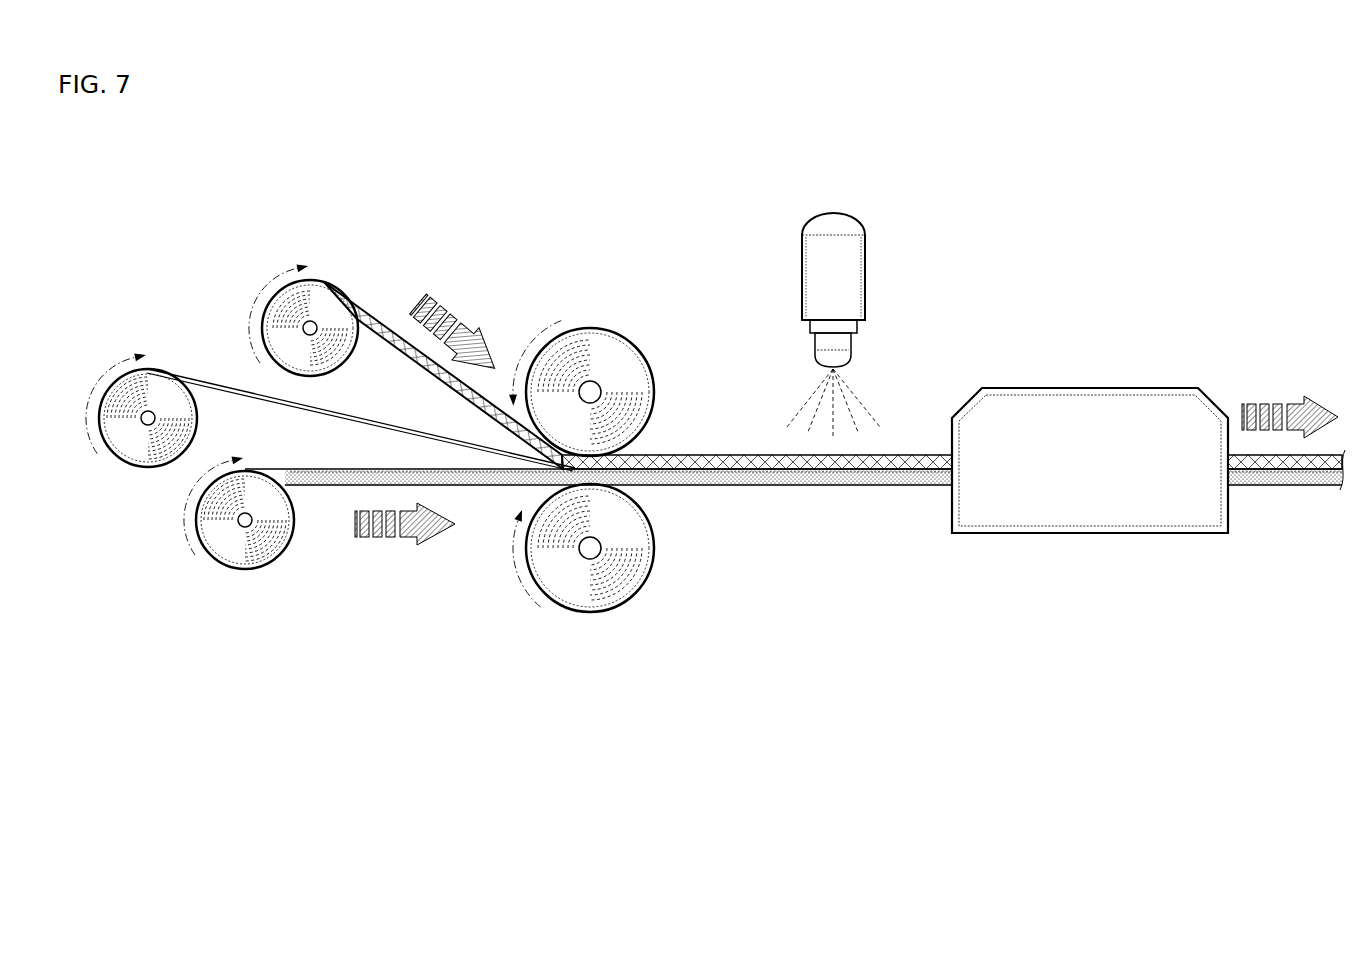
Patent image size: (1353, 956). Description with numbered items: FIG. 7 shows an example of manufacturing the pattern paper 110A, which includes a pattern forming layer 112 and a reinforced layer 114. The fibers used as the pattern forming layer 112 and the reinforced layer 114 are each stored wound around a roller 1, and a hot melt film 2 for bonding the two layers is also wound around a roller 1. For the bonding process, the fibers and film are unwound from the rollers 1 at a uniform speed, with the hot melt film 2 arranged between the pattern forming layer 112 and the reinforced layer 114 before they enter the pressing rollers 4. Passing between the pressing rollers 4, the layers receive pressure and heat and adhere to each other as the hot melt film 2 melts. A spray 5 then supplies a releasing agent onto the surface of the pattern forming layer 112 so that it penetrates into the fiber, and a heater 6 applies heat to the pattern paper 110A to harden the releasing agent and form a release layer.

The roller 1 is at (311, 279).
The hot melt film 2 is at (198, 373).
The pressing rollers 4 is at (592, 327).
The spray 5 is at (833, 212).
The heater 6 is at (1090, 387).
The pattern forming layer 112 is at (693, 460).
The reinforced layer 114 is at (700, 572).
The pattern paper 110A is at (795, 455).